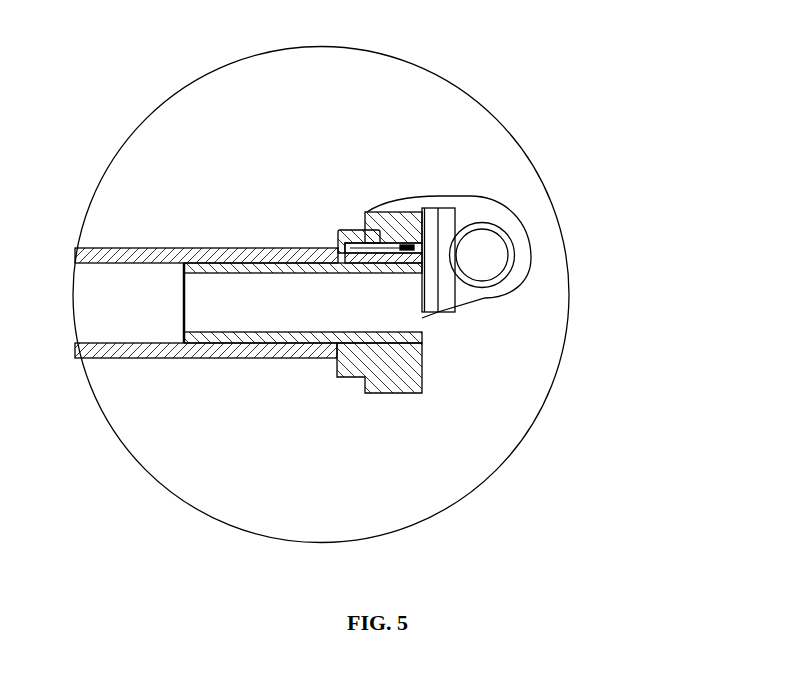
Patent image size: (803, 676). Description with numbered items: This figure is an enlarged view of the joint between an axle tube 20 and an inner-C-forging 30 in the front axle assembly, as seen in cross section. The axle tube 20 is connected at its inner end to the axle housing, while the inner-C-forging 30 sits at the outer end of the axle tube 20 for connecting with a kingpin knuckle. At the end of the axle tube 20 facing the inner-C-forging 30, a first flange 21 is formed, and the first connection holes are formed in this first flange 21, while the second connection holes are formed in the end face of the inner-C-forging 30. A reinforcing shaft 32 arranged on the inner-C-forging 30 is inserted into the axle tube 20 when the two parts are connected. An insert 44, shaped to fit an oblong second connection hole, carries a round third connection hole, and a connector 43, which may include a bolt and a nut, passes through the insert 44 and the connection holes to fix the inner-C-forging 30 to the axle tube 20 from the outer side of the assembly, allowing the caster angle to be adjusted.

The axle tube 20 is at (173, 248).
The first flange 21 is at (362, 230).
The inner-C-forging 30 is at (395, 220).
The reinforcing shaft 32 is at (295, 338).
The connector 43 is at (421, 268).
The insert 44 is at (420, 232).